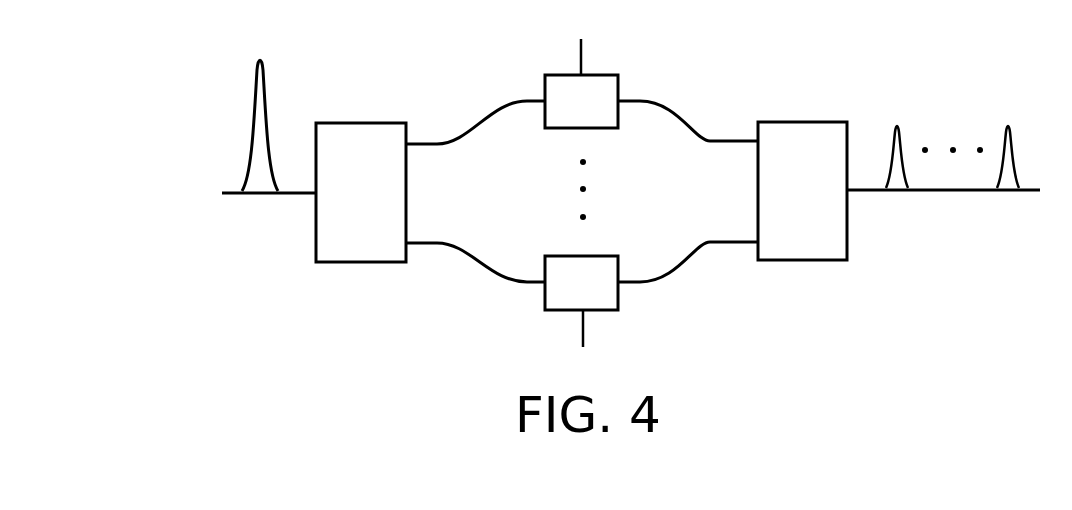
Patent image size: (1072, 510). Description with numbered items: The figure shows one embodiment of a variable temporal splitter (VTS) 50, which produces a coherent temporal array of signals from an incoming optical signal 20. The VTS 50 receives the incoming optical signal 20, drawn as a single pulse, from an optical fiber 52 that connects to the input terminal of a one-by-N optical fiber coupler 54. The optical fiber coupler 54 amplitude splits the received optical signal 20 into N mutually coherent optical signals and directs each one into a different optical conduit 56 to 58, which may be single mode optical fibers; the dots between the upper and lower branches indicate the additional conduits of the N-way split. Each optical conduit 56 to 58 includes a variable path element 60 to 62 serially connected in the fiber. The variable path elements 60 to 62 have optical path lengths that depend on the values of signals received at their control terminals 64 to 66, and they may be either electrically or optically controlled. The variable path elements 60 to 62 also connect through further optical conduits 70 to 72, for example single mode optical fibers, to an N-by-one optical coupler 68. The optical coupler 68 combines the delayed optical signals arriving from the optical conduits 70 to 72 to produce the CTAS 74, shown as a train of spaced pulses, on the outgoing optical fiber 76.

The incoming optical signal 20 is at (268, 79).
The variable temporal splitter 50 is at (478, 304).
The optical fiber 52 is at (275, 200).
The 1×N optical fiber coupler 54 is at (362, 266).
The optical conduit 56 is at (436, 138).
The optical conduit 58 is at (437, 248).
The variable path element 60 is at (596, 115).
The variable path element 62 is at (596, 296).
The control terminal 64 is at (585, 55).
The control terminal 66 is at (586, 327).
The N×1 optical coupler 68 is at (803, 262).
The optical conduit 70 is at (728, 138).
The optical conduit 72 is at (728, 246).
The CTAS 74 is at (1019, 112).
The outgoing optical fiber 76 is at (937, 192).